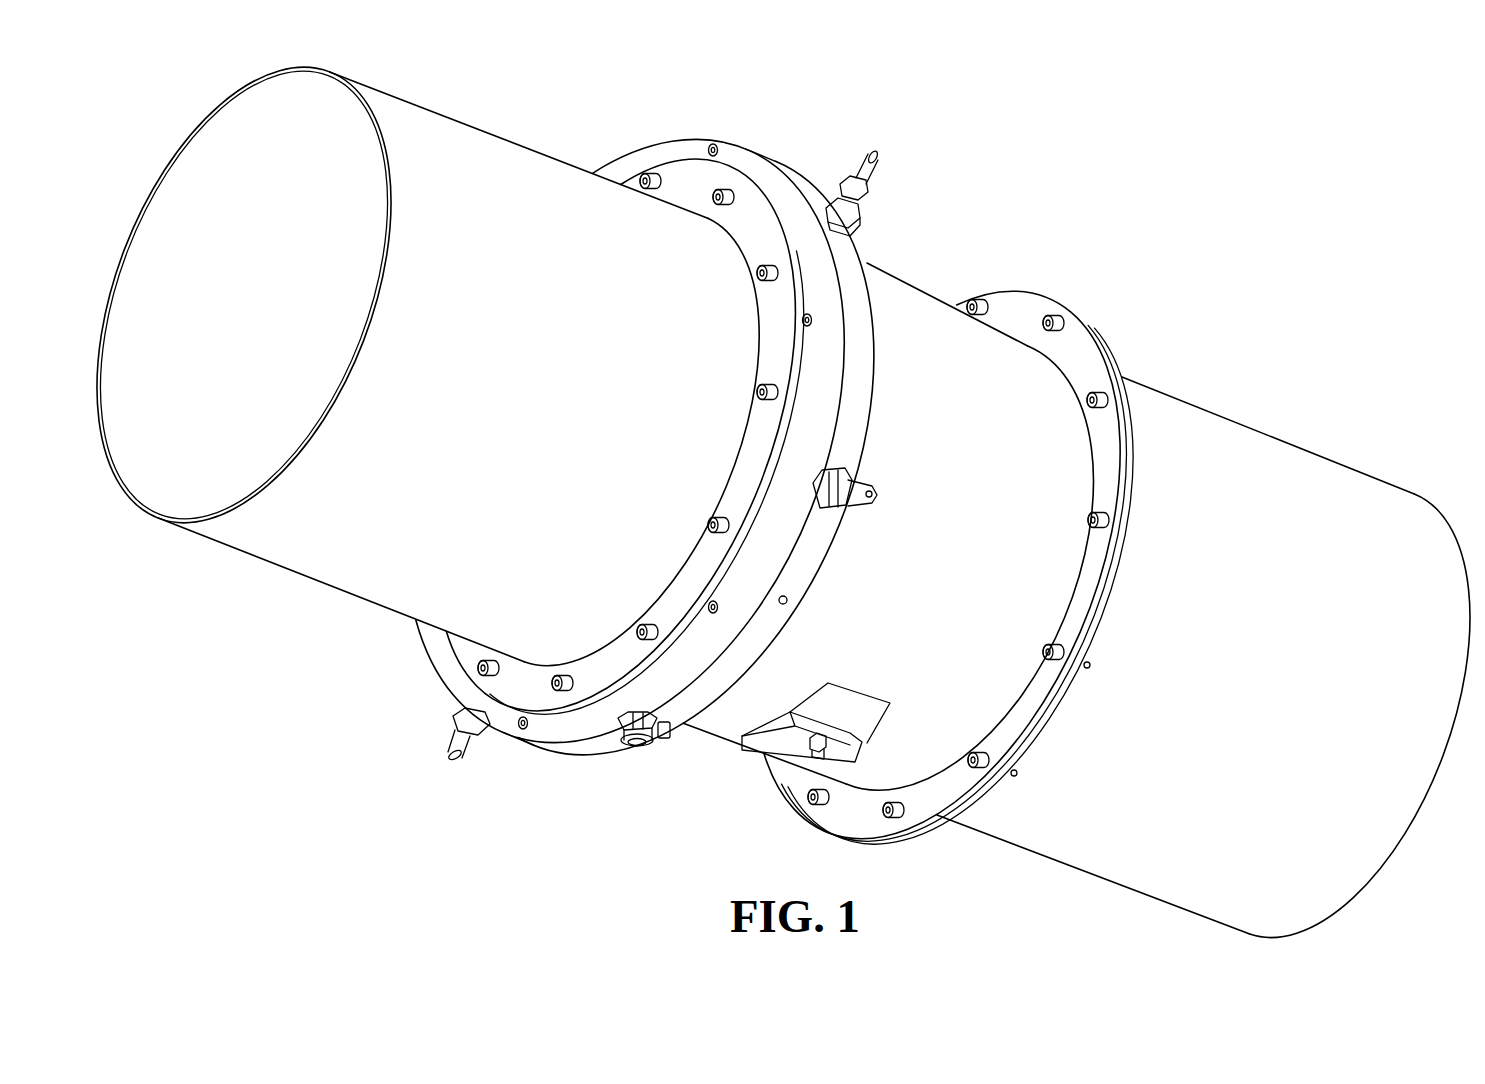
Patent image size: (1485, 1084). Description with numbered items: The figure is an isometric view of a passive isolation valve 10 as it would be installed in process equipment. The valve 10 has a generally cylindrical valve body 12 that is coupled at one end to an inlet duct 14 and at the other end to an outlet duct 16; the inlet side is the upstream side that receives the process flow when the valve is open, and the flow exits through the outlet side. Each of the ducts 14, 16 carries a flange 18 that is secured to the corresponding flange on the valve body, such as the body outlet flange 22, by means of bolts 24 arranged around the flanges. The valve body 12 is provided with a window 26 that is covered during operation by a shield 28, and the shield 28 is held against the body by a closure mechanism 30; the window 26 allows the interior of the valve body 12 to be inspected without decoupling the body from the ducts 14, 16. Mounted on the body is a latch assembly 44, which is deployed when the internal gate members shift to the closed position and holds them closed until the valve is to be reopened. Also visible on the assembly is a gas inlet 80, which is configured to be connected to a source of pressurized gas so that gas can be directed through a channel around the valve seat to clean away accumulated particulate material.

The passive isolation valve 10 is at (754, 482).
The valve body 12 is at (713, 742).
The inlet duct 14 is at (357, 580).
The outlet duct 16 is at (1103, 878).
The flange 18 is at (467, 655).
The body outlet flange 22 is at (1030, 300).
The bolts 24 is at (647, 638).
The window 26 is at (860, 712).
The shield 28 is at (860, 712).
The closure mechanism 30 is at (787, 733).
The latch assembly 44 is at (838, 170).
The gas inlet 80 is at (637, 748).